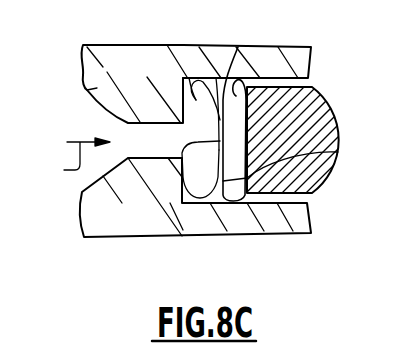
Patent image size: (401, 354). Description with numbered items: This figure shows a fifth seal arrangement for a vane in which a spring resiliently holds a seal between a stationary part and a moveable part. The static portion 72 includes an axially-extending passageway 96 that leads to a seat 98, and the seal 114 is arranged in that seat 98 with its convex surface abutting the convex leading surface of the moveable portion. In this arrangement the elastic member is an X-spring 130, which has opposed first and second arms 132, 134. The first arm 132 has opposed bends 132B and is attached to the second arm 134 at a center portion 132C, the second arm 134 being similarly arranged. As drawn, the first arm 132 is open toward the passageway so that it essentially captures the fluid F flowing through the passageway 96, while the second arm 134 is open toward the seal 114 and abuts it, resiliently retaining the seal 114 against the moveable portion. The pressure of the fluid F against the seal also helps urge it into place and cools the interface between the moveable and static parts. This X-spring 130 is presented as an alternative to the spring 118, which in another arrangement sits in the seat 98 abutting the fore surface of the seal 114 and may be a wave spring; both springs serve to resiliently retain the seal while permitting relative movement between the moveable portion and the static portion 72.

The static portion 72 is at (82, 89).
The axially-extending passageway 96 is at (148, 143).
The seat 98 is at (216, 78).
The seal 114 is at (335, 112).
The spring 118 is at (238, 47).
The X-spring 130 is at (224, 200).
The first arm 132 is at (213, 113).
The opposed bends 132B is at (189, 78).
The center portion 132C is at (183, 200).
The second arm 134 is at (338, 152).
The fluid F is at (81, 161).